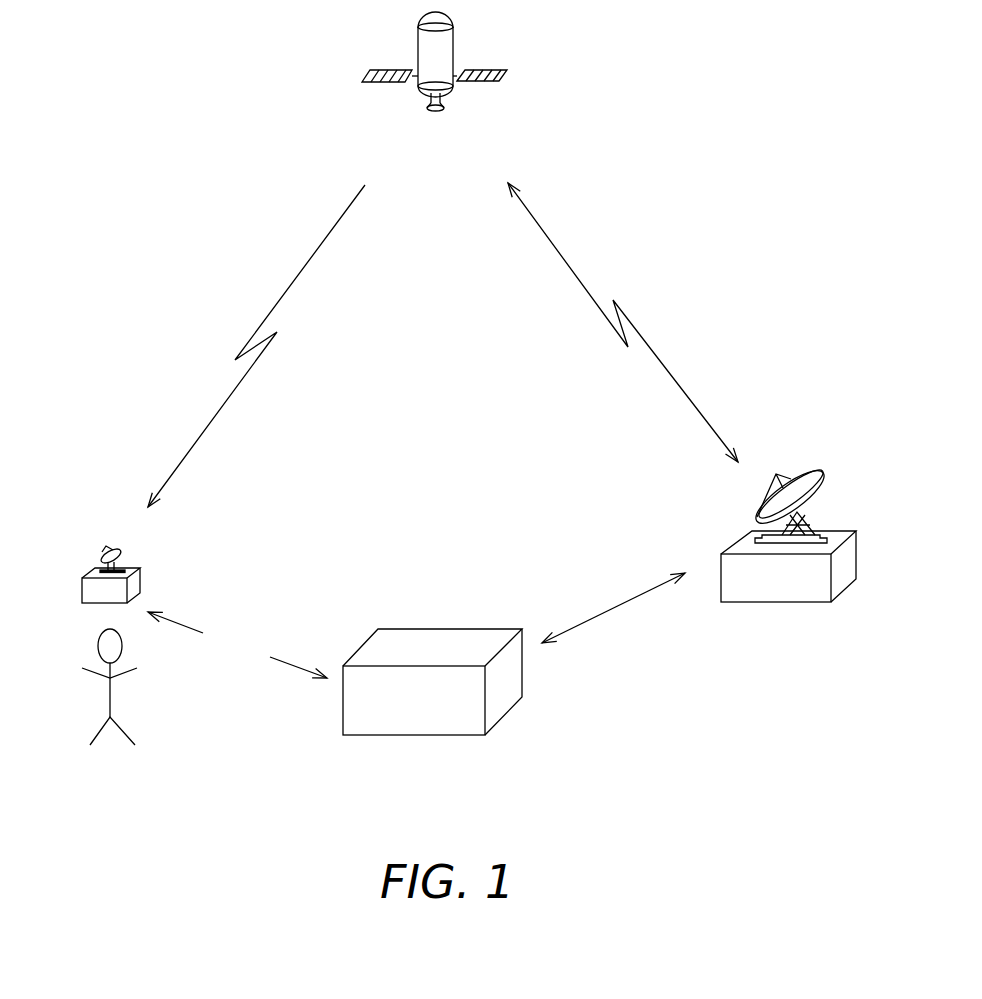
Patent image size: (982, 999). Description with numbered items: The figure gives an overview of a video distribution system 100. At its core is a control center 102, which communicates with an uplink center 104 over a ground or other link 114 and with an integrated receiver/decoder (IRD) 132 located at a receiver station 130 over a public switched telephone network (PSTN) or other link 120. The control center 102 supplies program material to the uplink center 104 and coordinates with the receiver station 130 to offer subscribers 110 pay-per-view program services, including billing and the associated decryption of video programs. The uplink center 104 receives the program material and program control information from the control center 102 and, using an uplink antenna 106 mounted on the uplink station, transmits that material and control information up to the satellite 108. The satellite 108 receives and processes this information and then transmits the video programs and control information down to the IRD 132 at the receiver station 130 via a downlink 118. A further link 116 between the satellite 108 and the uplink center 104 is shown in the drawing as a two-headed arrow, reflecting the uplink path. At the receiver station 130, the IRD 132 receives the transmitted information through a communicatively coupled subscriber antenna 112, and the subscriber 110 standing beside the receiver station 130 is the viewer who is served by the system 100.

The video distribution system 100 is at (710, 225).
The control center 102 is at (500, 720).
The uplink center 104 is at (772, 604).
The uplink antenna 106 is at (825, 480).
The satellite 108 is at (480, 82).
The subscribers 110 is at (135, 692).
The subscriber antenna 112 is at (111, 550).
The ground or other link 114 is at (608, 608).
The satellite link to gateway 116 is at (662, 362).
The downlink 118 is at (303, 270).
The public switched telephone network or other link 120 is at (268, 620).
The receiver station 130 is at (160, 557).
The integrated receiver/decoder 132 is at (82, 593).